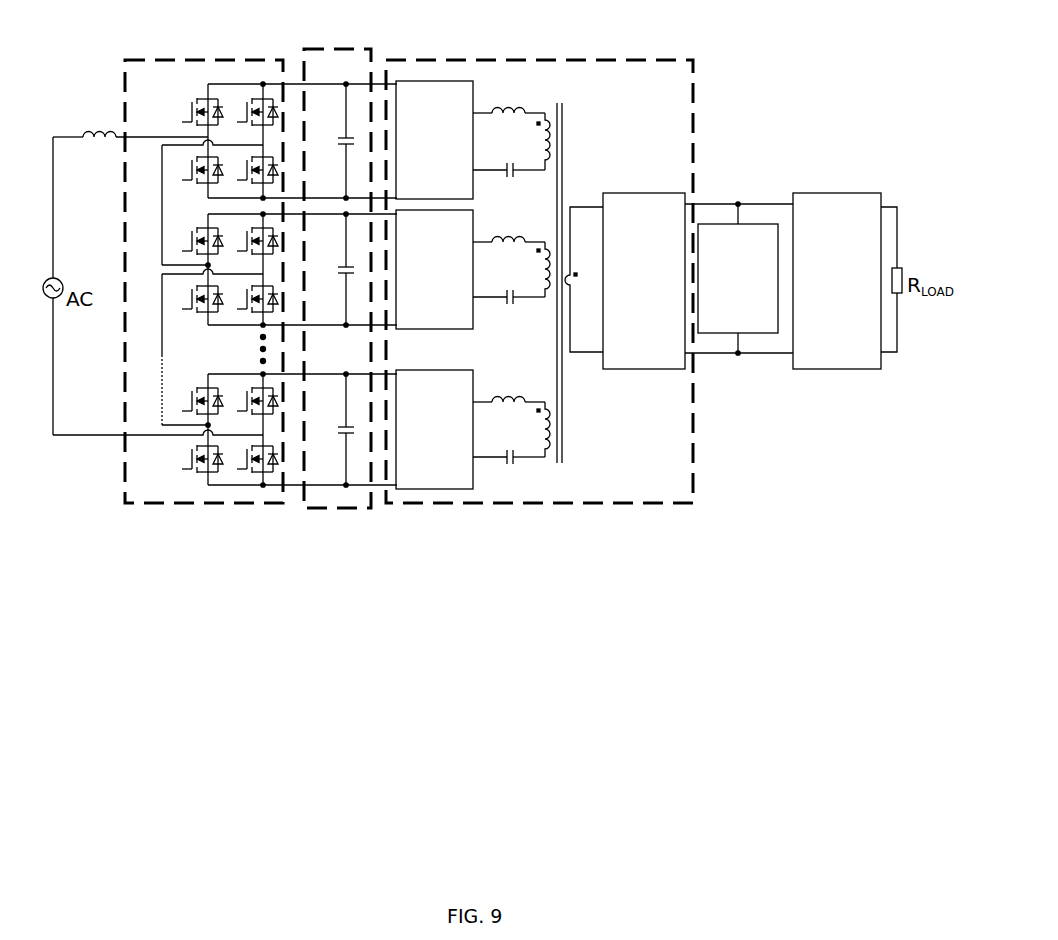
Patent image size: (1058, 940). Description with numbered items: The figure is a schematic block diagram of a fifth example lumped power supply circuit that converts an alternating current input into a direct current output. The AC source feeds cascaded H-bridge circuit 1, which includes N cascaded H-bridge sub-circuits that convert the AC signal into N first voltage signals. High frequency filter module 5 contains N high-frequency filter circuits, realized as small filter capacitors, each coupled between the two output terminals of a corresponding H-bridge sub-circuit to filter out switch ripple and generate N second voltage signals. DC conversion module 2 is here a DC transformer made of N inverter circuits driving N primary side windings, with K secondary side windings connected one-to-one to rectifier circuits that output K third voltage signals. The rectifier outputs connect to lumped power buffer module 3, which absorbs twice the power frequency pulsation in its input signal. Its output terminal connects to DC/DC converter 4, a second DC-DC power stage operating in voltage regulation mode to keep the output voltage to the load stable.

The cascaded H-bridge circuit 1 is at (200, 59).
The DC conversion module 2 is at (593, 59).
The lumped power buffer module 3 is at (746, 223).
The DC/DC converter 4 is at (816, 192).
The high frequency filter module 5 is at (318, 47).